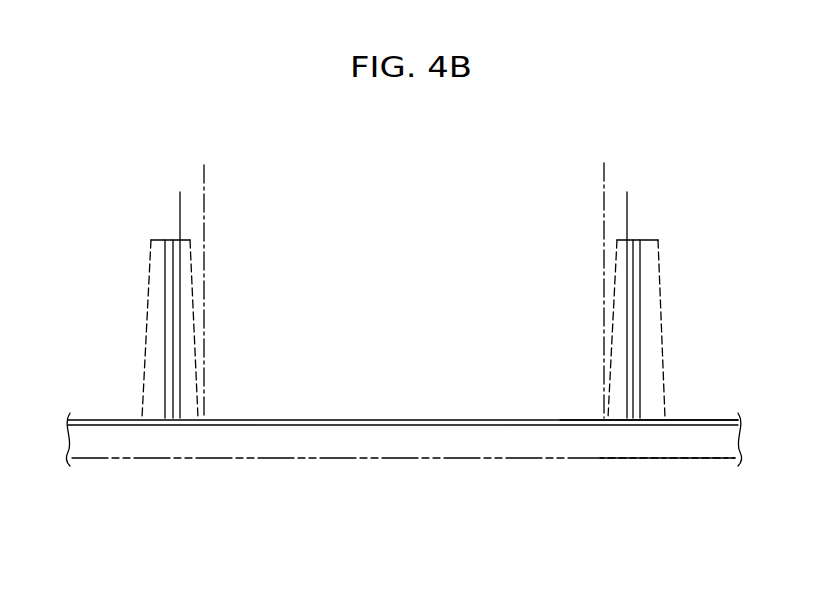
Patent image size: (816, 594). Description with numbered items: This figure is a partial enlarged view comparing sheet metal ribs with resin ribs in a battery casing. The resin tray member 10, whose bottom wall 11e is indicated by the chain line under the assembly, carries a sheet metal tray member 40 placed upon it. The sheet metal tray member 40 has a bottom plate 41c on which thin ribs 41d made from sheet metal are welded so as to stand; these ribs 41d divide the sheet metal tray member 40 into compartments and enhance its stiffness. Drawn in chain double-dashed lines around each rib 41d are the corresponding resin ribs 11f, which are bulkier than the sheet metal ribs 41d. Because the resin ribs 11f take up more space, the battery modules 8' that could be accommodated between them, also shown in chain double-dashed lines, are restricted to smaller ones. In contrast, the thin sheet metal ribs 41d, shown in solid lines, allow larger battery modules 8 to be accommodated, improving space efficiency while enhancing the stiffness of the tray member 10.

The sheet metal tray member 40 is at (108, 412).
The tray member 10 is at (184, 465).
The bottom plate 41c is at (695, 421).
The ribs 41d is at (643, 278).
The battery modules 8 is at (651, 298).
The battery modules 8' is at (635, 276).
The ribs 11f is at (660, 347).
The bottom wall 11e is at (692, 460).